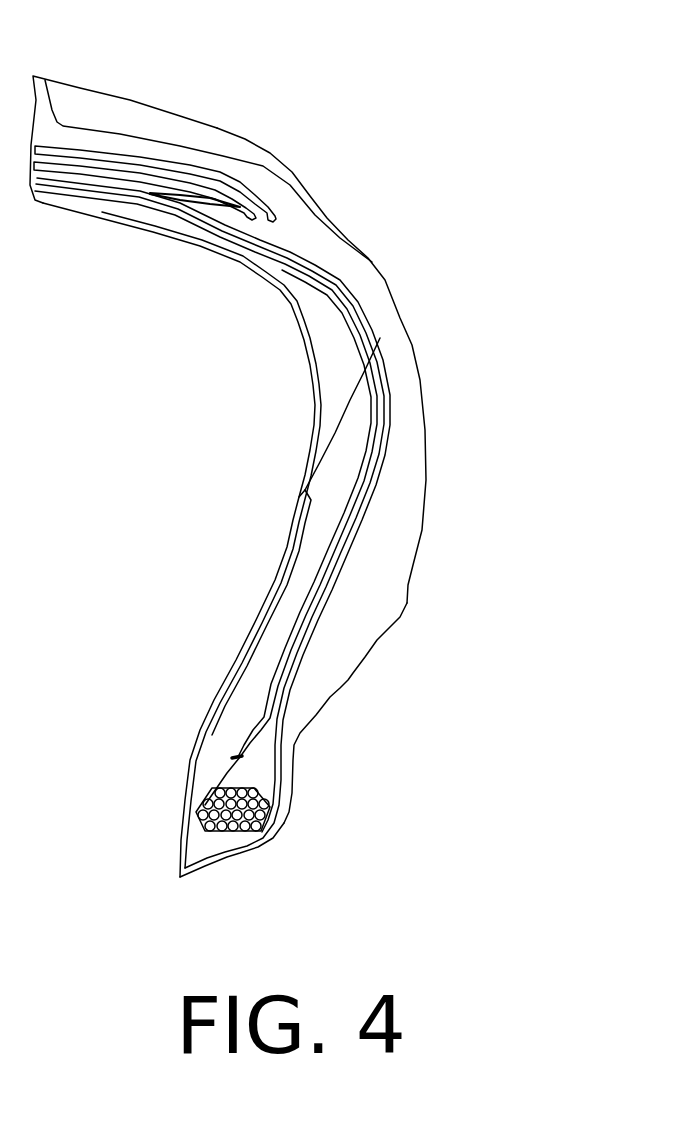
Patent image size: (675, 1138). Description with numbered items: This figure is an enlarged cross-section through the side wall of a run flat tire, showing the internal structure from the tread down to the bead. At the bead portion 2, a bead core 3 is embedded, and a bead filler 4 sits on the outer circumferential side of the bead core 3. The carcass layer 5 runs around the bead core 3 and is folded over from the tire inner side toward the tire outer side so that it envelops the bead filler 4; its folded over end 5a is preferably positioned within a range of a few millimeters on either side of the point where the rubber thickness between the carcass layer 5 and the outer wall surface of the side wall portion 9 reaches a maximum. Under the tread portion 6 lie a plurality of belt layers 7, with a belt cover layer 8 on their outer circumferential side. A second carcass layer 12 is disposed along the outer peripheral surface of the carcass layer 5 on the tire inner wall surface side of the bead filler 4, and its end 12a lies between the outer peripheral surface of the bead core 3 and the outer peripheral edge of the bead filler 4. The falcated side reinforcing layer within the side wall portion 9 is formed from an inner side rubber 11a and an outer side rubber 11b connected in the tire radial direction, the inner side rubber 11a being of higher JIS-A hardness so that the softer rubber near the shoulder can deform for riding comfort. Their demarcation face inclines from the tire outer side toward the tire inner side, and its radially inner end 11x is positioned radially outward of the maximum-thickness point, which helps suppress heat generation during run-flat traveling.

The bead portion 2 is at (286, 829).
The bead core 3 is at (233, 865).
The bead filler 4 is at (332, 713).
The carcass layer 5 is at (179, 540).
The folded over end of the carcass layer 5a is at (261, 523).
The tread portion 6 is at (201, 131).
The belt layer 7 is at (149, 243).
The belt cover layer 8 is at (173, 151).
The side wall portion 9 is at (390, 365).
The inner side rubber 11a is at (235, 612).
The outer side rubber 11b is at (245, 341).
The end of the demarcation face 11x is at (271, 426).
The second carcass layer 12 is at (300, 540).
The end of the second carcass layer 12a is at (170, 726).